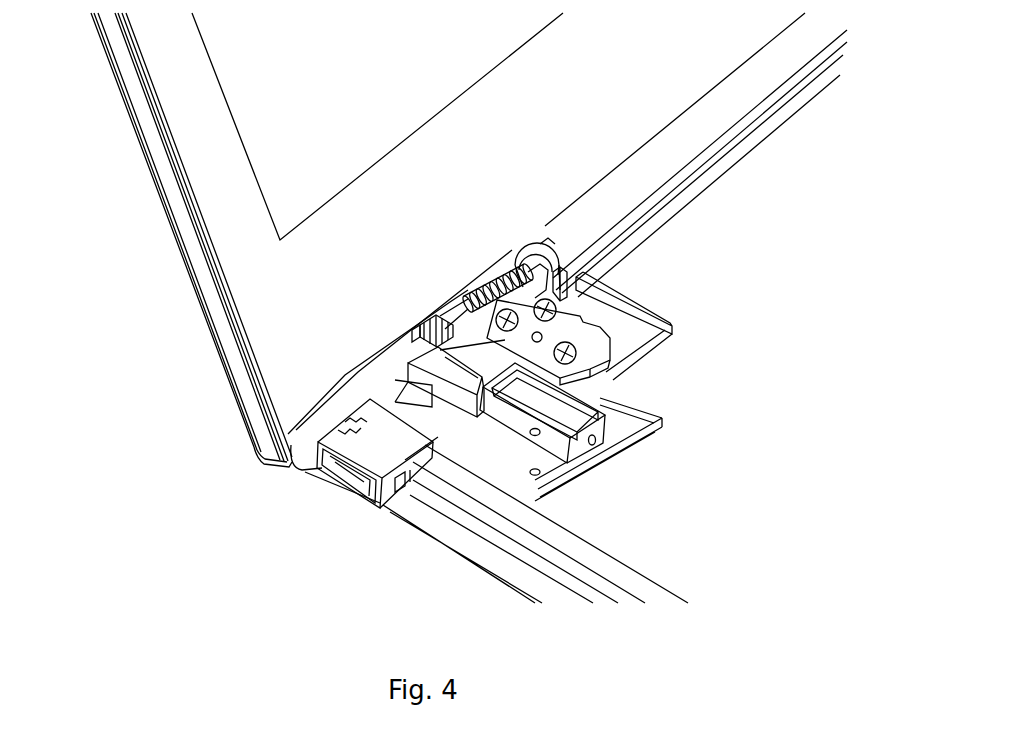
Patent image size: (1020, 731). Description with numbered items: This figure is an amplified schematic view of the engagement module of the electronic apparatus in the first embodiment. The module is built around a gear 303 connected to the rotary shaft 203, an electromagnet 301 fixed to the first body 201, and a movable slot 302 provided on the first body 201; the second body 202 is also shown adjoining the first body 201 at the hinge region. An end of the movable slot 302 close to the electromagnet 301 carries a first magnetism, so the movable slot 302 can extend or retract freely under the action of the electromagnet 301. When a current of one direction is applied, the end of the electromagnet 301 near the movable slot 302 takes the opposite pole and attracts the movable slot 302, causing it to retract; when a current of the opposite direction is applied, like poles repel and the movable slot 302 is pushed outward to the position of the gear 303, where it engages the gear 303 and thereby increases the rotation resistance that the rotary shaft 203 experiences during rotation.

The first body 201 is at (437, 530).
The display lid 202 is at (203, 177).
The rotary shaft 203 is at (490, 268).
The electromagnet 301 is at (565, 410).
The movable slot 302 is at (460, 357).
The gear 303 is at (420, 322).